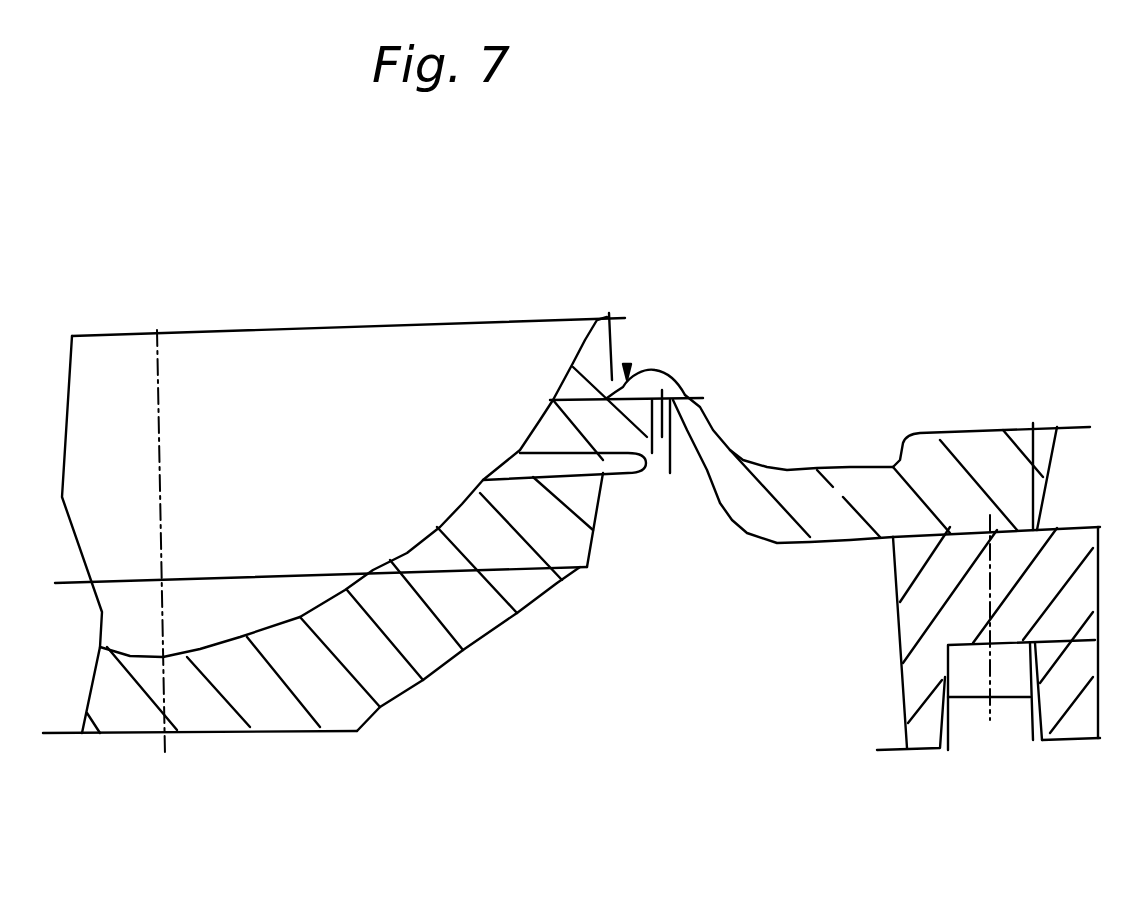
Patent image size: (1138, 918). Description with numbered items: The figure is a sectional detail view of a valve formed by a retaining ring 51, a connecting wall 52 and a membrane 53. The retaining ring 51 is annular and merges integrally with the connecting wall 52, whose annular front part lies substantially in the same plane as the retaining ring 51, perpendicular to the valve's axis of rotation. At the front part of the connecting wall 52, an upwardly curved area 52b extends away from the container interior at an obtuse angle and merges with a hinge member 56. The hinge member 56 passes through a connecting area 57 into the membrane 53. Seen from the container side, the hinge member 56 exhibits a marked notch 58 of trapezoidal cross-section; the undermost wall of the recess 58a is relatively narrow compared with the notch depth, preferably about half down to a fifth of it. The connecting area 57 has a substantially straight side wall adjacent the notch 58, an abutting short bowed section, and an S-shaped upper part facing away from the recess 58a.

The retaining ring 51 is at (996, 442).
The connecting wall 52 is at (783, 462).
The upwardly curved area of connecting wall 52b is at (789, 403).
The membrane 53 is at (373, 591).
The hinge member 56 is at (638, 276).
The connecting area 57 is at (628, 504).
The notch 58 is at (697, 504).
The recess 58a is at (677, 343).